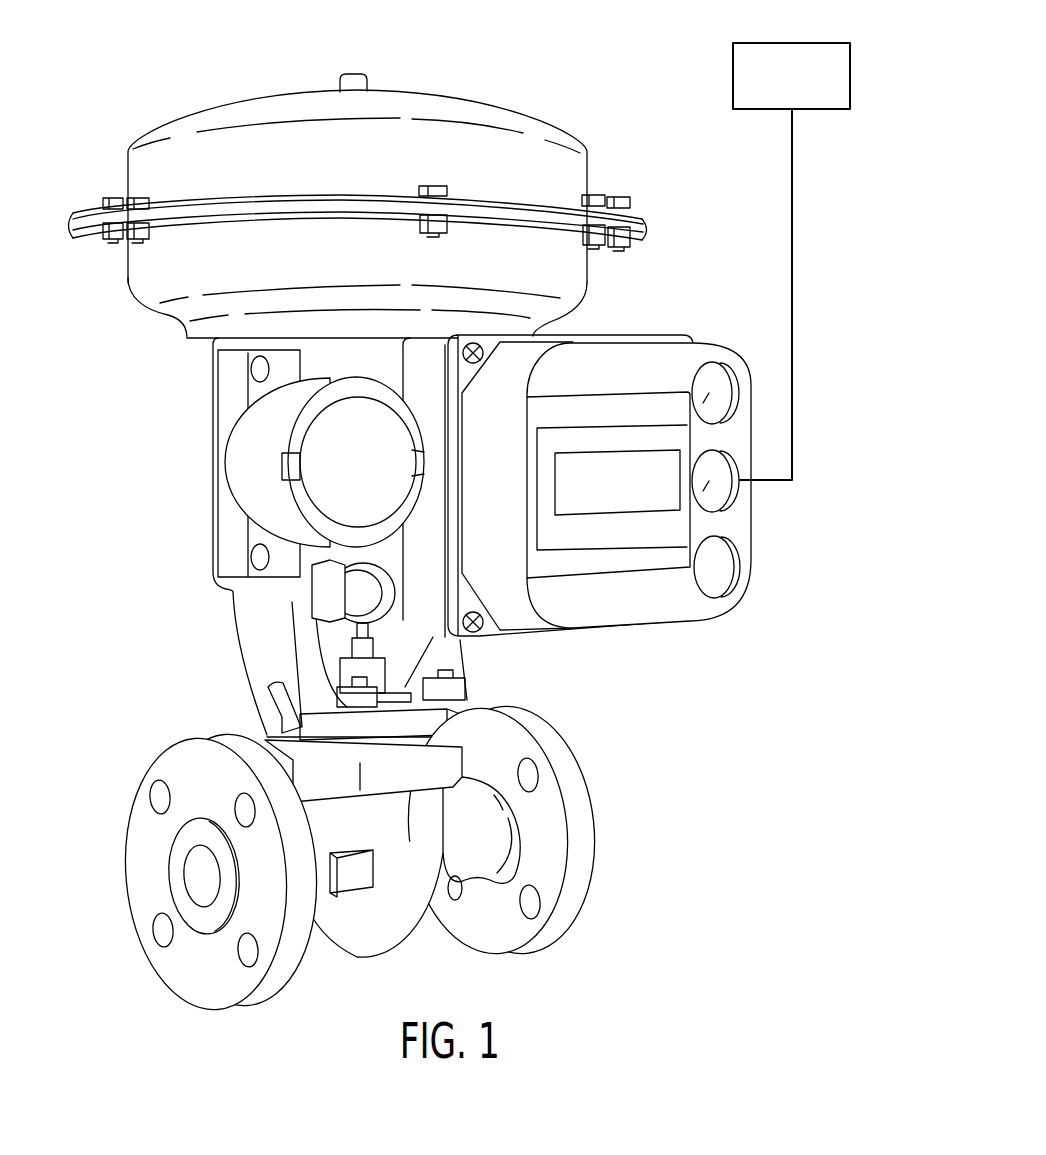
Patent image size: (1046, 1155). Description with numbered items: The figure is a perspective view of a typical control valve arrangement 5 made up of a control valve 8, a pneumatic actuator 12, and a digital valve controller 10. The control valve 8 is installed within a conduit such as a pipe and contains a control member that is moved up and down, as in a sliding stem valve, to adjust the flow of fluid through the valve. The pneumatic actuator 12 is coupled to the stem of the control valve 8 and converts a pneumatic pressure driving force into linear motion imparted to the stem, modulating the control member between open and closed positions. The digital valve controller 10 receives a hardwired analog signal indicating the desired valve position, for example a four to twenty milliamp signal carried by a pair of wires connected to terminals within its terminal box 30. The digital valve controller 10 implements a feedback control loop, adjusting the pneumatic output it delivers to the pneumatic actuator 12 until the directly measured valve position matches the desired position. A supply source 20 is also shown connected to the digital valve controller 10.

The control valve arrangement 5 is at (188, 23).
The pneumatic actuator 12 is at (585, 284).
The terminal box 30 is at (336, 474).
The digital valve controller 10 is at (658, 652).
The supply source 20 is at (762, 20).
The control valve 8 is at (346, 975).